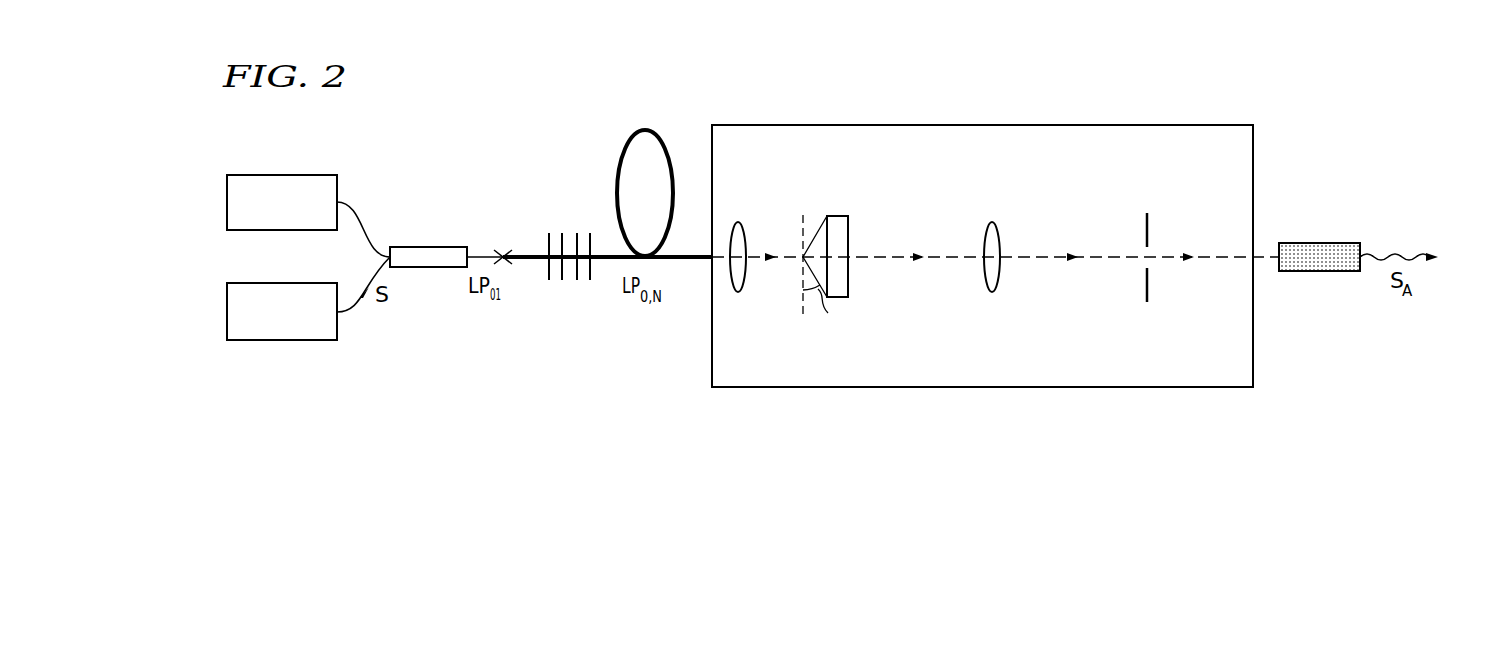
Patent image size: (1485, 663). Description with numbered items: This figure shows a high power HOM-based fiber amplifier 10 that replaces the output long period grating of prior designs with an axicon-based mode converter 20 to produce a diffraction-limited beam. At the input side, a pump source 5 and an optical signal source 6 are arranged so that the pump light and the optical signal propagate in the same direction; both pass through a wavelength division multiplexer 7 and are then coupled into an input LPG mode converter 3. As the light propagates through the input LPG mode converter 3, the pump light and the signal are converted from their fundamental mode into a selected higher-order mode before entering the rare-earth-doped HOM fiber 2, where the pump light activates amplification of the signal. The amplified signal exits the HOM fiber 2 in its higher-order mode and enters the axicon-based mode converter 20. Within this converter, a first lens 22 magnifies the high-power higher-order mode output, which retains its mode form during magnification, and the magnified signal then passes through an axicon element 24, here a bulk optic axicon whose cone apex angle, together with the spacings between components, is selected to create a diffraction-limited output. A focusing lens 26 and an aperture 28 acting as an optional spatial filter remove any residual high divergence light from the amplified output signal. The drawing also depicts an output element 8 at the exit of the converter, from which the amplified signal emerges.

The high power HOM-based fiber amplifier 10 is at (185, 158).
The pump source 5 is at (227, 200).
The optical signal source 6 is at (227, 311).
The wavelength division multiplexer 7 is at (420, 247).
The input LPG mode converter 3 is at (569, 287).
The HOM fiber 2 is at (617, 166).
The axicon-based mode converter 20 is at (1187, 125).
The first lens 22 is at (740, 222).
The axicon element 24 is at (848, 234).
The focusing lens 26 is at (993, 222).
The aperture 28 is at (1146, 226).
The output element 8 is at (1317, 243).